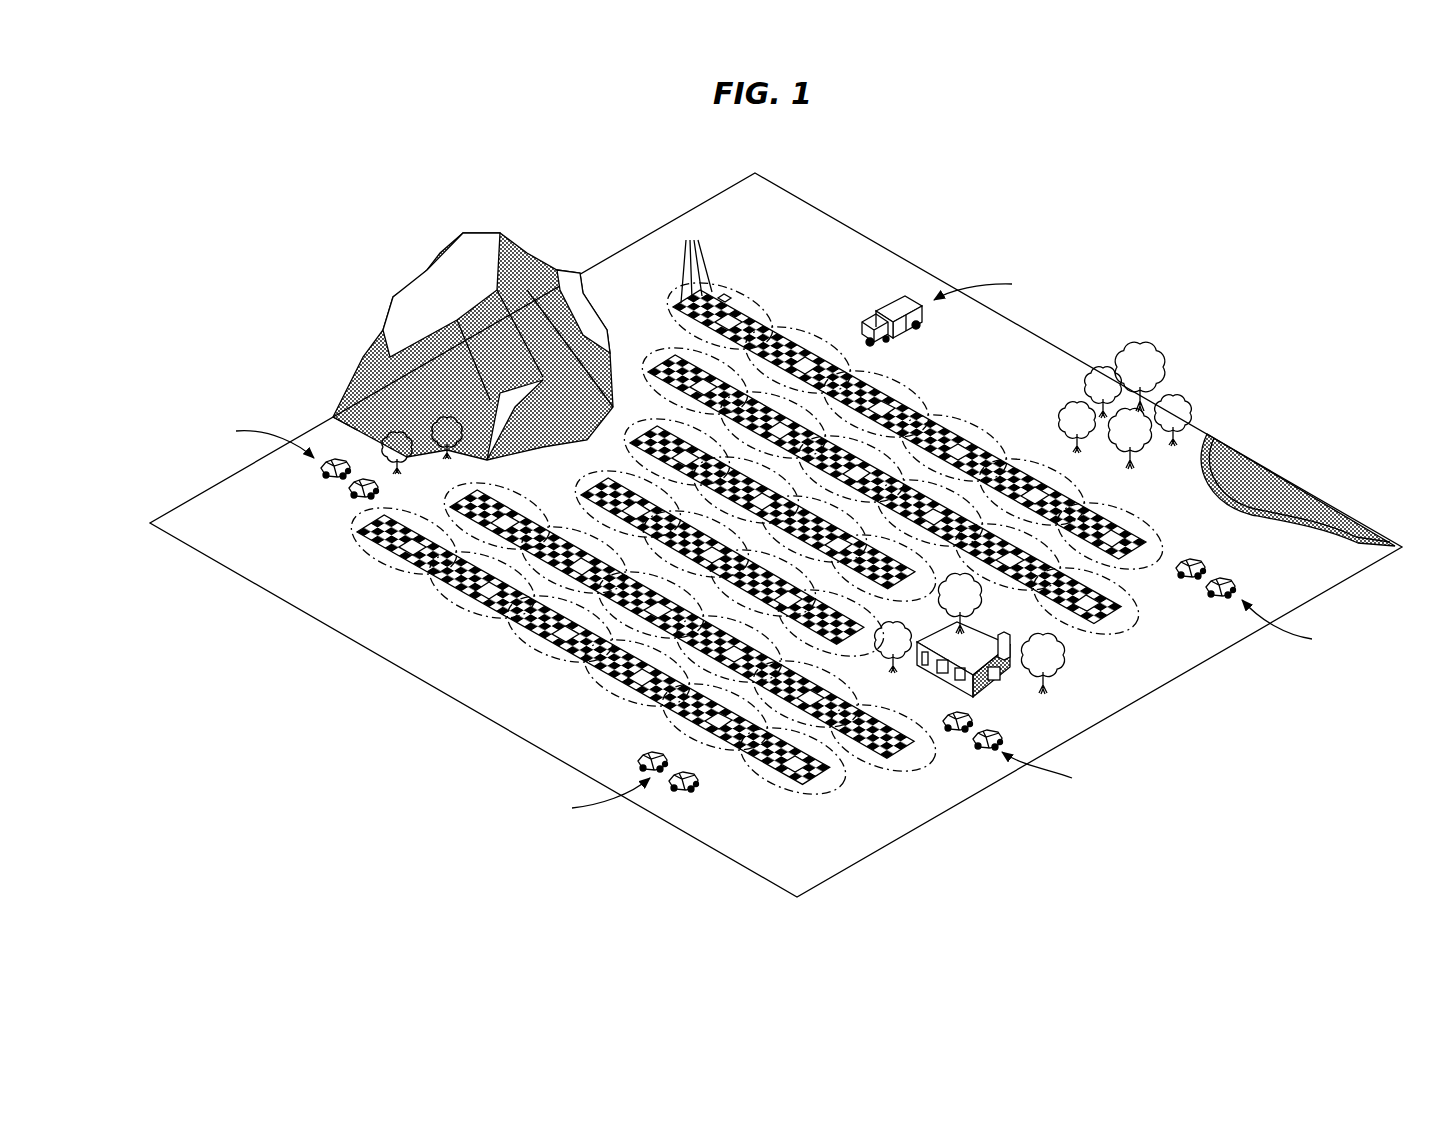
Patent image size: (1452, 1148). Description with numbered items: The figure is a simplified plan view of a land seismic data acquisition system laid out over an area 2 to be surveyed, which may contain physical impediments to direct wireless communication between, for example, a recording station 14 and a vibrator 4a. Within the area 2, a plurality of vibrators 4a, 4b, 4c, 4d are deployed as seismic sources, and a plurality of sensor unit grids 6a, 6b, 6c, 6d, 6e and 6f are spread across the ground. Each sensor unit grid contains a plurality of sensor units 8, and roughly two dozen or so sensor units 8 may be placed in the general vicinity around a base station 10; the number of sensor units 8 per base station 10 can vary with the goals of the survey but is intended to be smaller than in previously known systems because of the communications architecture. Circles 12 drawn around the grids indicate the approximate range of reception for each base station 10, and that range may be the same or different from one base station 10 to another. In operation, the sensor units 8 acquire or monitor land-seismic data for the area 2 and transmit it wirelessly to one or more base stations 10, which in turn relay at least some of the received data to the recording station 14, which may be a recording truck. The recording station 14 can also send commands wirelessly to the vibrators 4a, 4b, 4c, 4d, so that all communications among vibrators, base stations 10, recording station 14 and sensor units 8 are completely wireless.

The area to be surveyed 2 is at (836, 276).
The vibrator 4a is at (318, 455).
The vibrator 4b is at (652, 790).
The vibrator 4c is at (1000, 760).
The vibrator 4d is at (1236, 606).
The sensor unit grid 6a is at (894, 358).
The sensor unit grid 6b is at (658, 352).
The sensor unit grid 6c is at (624, 416).
The sensor unit grid 6d is at (578, 474).
The sensor unit grid 6e is at (936, 760).
The sensor unit grid 6f is at (834, 790).
The sensor unit 8 is at (687, 240).
The base station 10 is at (724, 298).
The circle 12 is at (752, 285).
The recording station 14 is at (920, 298).